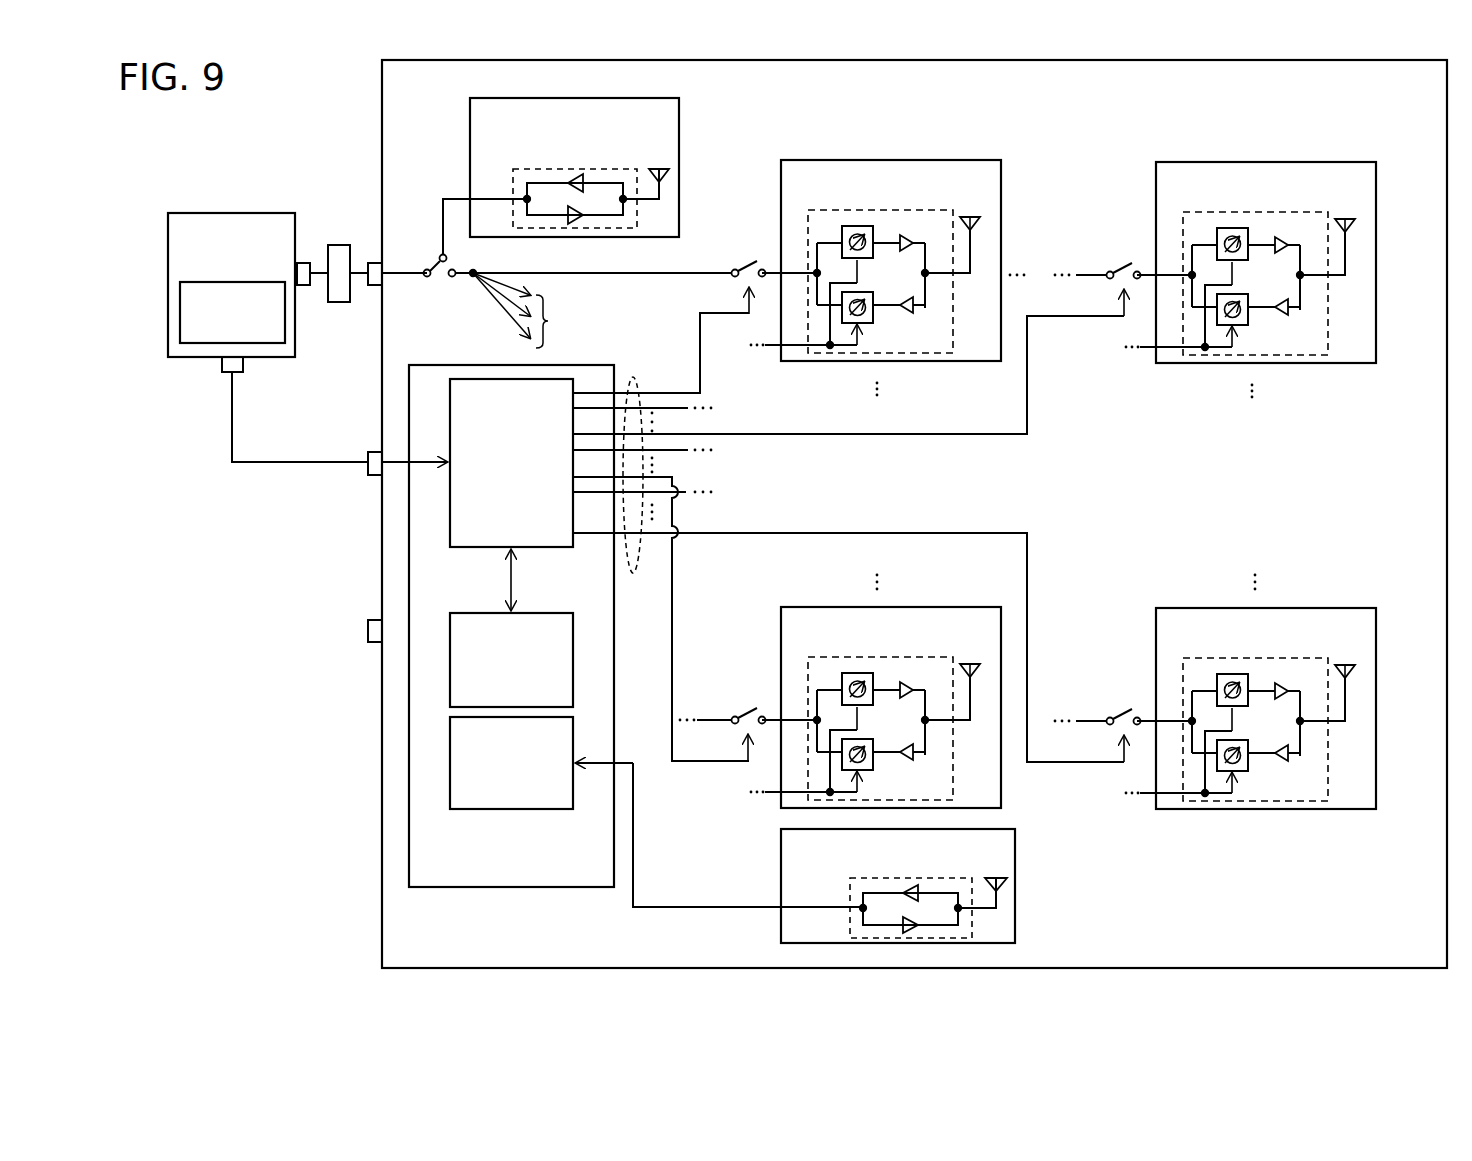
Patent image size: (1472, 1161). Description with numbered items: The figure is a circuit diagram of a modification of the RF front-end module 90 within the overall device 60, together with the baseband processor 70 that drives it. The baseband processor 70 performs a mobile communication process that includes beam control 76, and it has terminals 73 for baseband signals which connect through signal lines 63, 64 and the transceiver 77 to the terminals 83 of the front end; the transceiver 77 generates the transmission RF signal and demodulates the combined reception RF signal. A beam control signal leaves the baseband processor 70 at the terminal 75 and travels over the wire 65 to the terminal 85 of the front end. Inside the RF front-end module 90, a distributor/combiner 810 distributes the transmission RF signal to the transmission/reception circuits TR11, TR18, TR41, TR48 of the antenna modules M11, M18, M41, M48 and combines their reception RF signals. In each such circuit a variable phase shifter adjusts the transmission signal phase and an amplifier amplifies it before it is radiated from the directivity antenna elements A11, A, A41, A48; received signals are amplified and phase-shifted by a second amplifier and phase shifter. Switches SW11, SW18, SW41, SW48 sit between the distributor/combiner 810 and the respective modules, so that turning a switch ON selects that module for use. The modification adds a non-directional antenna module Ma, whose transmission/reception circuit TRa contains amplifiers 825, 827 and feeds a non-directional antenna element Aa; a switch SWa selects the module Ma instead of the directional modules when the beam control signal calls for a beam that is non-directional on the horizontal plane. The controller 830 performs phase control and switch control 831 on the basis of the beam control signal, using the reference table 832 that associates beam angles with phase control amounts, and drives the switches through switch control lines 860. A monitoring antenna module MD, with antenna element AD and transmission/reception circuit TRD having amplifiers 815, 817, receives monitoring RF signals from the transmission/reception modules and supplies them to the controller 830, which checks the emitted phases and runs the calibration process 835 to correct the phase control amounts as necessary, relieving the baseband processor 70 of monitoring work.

The antenna device 60 is at (333, 147).
The RF front-end module 90 is at (380, 815).
The baseband processor 70 is at (205, 210).
The beam control 76 is at (190, 345).
The terminals 73 is at (301, 263).
The signal line 63 is at (318, 276).
The transceiver 77 is at (338, 244).
The signal line 64 is at (370, 263).
The terminals 83 is at (375, 286).
The terminal 75 is at (222, 371).
The wire 65 is at (230, 435).
The terminal 85 is at (370, 452).
The distributor/combiner 810 is at (560, 269).
The switch SWa is at (441, 284).
The non-directional antenna module Ma is at (679, 128).
The transmission/reception circuit TRa is at (518, 210).
The non-directional antenna element Aa is at (668, 171).
The amplifier 825 is at (572, 183).
The amplifier 827 is at (578, 222).
The controller 830 is at (409, 864).
The phase control and switch control 831 is at (553, 549).
The reference table 832 is at (450, 688).
The calibration process 835 is at (450, 741).
The switch control lines 860 is at (634, 573).
The antenna module M11 is at (903, 281).
The antenna module M18 is at (1281, 285).
The antenna module M41 is at (903, 692).
The antenna module M48 is at (1282, 731).
The switch SW11 is at (716, 276).
The switch SW18 is at (1091, 277).
The switch SW41 is at (719, 717).
The switch SW48 is at (1091, 723).
The transmission/reception circuit TR11 is at (906, 299).
The transmission/reception circuit TR18 is at (1281, 310).
The transmission/reception circuit TR41 is at (903, 713).
The transmission/reception circuit TR48 is at (1282, 756).
The antenna element A11 is at (1003, 193).
The antenna element A is at (1375, 213).
The antenna element A41 is at (1020, 626).
The antenna element A48 is at (1382, 658).
The monitoring antenna module MD is at (1015, 845).
The transmission/reception circuit TRD is at (890, 894).
The antenna element AD is at (1007, 882).
The amplifier 815 is at (915, 888).
The amplifier 817 is at (918, 922).